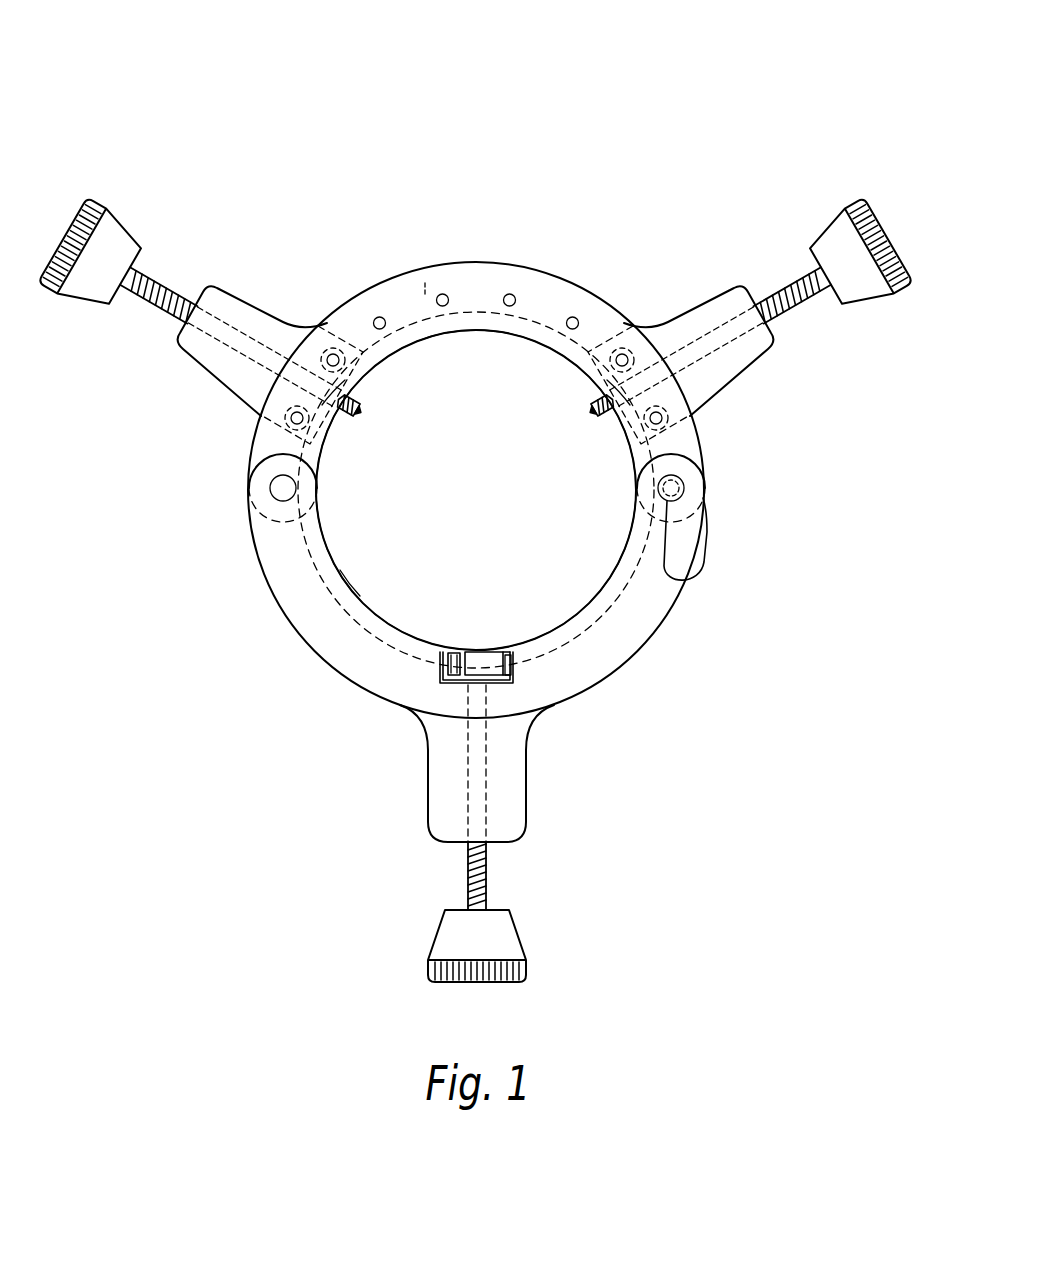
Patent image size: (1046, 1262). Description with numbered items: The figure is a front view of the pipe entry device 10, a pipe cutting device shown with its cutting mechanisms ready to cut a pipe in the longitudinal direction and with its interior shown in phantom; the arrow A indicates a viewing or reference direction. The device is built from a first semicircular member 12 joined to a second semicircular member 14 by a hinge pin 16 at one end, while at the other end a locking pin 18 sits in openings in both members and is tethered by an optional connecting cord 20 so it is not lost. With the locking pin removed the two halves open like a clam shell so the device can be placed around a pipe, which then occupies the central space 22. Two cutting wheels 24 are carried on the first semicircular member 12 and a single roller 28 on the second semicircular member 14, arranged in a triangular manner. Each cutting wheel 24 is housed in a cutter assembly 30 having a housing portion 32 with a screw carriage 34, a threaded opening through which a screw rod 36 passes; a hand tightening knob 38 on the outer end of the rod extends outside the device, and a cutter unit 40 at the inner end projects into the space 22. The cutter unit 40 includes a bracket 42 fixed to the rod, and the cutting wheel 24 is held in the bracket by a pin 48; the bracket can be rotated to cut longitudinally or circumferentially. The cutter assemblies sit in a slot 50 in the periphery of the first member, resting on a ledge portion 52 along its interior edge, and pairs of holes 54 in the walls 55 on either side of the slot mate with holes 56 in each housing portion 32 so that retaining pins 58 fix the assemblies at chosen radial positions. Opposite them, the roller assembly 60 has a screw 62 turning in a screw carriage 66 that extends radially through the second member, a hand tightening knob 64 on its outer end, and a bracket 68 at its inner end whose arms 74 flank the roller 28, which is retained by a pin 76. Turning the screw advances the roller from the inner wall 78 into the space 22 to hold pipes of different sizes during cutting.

The pipe entry device 10 is at (668, 170).
The first semicircular member 12 is at (458, 276).
The second semicircular member 14 is at (630, 617).
The hinge pin 16 is at (278, 488).
The locking pin 18 is at (675, 490).
The connecting cord 20 is at (706, 572).
The space 22 is at (465, 531).
The cutting wheel 24 is at (358, 410).
The roller 28 is at (483, 662).
The cutter assembly 30 is at (174, 343).
The housing portion 32 is at (208, 365).
The screw carriage 34 is at (210, 313).
The screw rod 36 is at (168, 288).
The hand tightening knob 38 is at (100, 200).
The cutter unit 40 is at (347, 421).
The bracket 42 is at (333, 412).
The pin 48 is at (362, 400).
The slot 50 is at (425, 277).
The ledge portion 52 is at (490, 312).
The holes 54 is at (512, 296).
The walls 55 is at (383, 297).
The holes 56 is at (330, 351).
The retaining pins 58 is at (292, 417).
The roller assembly 60 is at (510, 784).
The screw 62 is at (467, 878).
The hand tightening knob 64 is at (452, 948).
The screw carriage 66 is at (468, 777).
The bracket 68 is at (508, 678).
The arms 74 is at (447, 660).
The pin 76 is at (508, 657).
The inner wall 78 is at (347, 578).
The direction arrow A is at (195, 109).